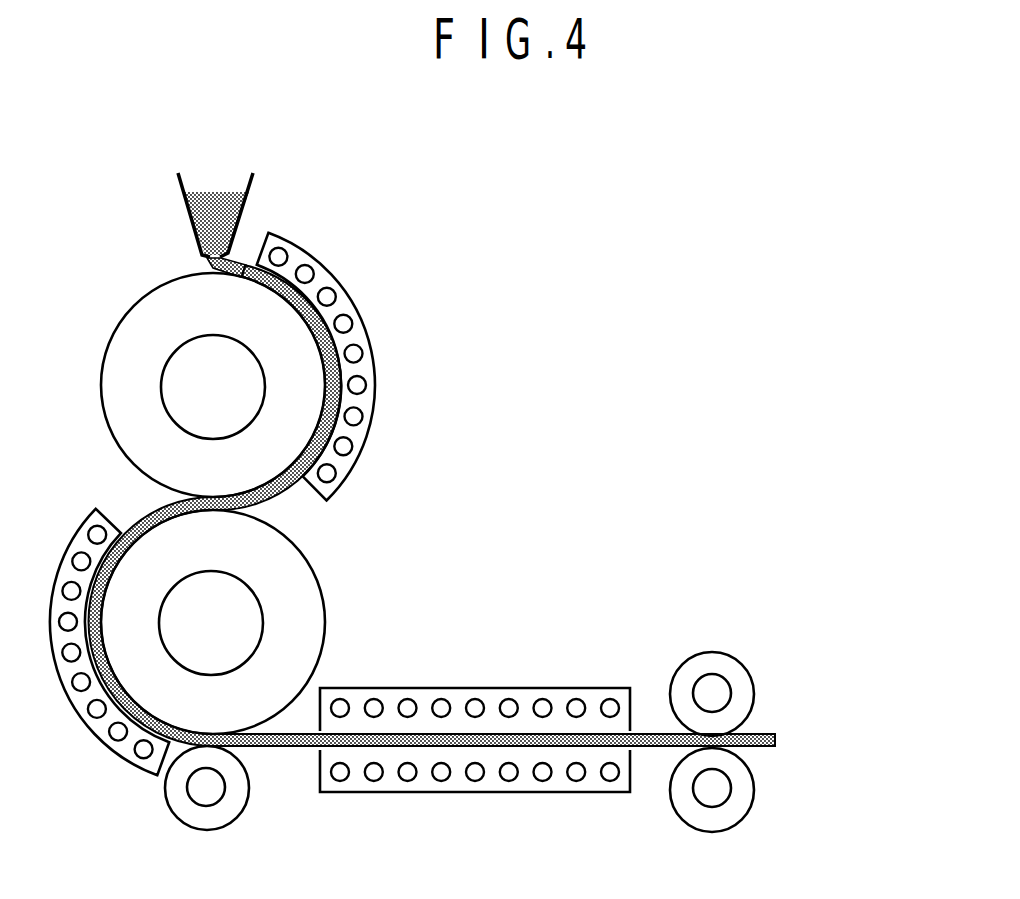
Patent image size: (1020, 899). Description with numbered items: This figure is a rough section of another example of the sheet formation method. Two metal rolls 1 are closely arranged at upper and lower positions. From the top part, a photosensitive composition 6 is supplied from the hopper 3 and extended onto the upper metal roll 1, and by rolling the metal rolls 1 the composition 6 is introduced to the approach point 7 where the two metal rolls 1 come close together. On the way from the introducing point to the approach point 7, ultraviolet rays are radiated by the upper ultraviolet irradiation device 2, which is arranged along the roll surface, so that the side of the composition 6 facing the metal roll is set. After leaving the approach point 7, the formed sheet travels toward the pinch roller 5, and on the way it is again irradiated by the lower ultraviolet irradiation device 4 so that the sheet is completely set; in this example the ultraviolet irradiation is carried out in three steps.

The metal roll 1 is at (143, 307).
The upper ultraviolet irradiation device 2 is at (358, 383).
The hopper 3 is at (183, 202).
The lower ultraviolet irradiation device 4 is at (478, 705).
The pinch roller 5 is at (687, 670).
The photosensitive composition 6 is at (237, 260).
The approach point 7 is at (210, 502).